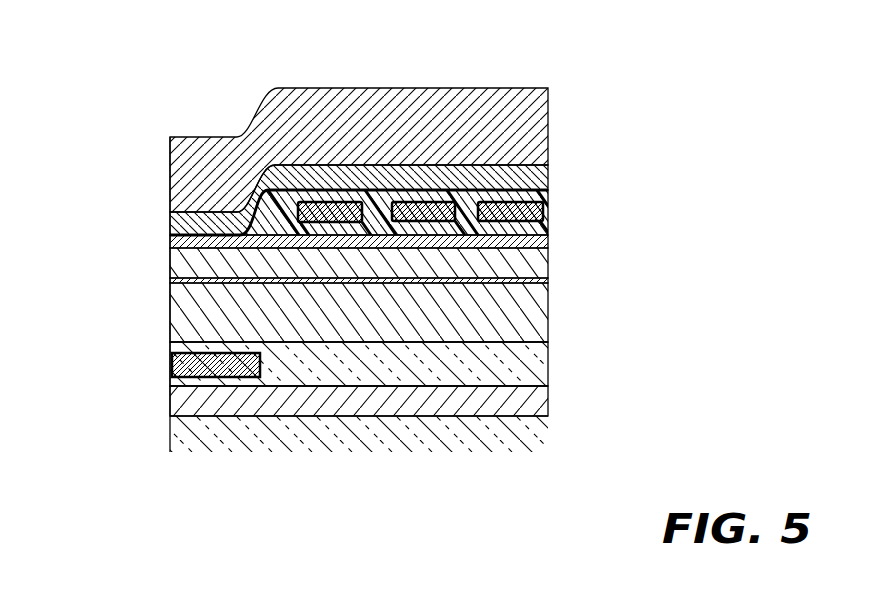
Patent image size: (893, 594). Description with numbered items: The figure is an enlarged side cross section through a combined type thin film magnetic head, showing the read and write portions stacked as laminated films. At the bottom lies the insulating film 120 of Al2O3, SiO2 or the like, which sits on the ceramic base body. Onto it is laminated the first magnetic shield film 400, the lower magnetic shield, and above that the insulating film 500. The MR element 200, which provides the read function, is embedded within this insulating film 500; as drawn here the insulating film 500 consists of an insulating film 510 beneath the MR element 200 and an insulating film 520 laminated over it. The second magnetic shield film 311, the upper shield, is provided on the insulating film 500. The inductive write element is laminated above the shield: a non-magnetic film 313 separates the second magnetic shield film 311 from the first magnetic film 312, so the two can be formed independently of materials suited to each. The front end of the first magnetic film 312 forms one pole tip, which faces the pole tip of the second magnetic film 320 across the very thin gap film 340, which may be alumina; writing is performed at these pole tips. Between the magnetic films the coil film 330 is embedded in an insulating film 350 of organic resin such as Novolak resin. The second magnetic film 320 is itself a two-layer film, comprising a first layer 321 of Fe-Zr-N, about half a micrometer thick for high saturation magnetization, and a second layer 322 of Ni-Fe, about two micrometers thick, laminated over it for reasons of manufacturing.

The insulating film 120 is at (533, 440).
The MR element 200 is at (168, 365).
The second magnetic shield film 311 is at (170, 305).
The first magnetic film 312 is at (170, 260).
The non-magnetic film 313 is at (545, 280).
The second magnetic film 320 is at (170, 136).
The first layer 321 is at (535, 177).
The second layer 322 is at (535, 108).
The coil film 330 is at (331, 203).
The gap film 340 is at (545, 236).
The insulating film 350 is at (466, 212).
The first magnetic shield film 400 is at (532, 403).
The insulating film 500 is at (537, 372).
The insulating film 510 is at (170, 383).
The insulating film 520 is at (170, 345).